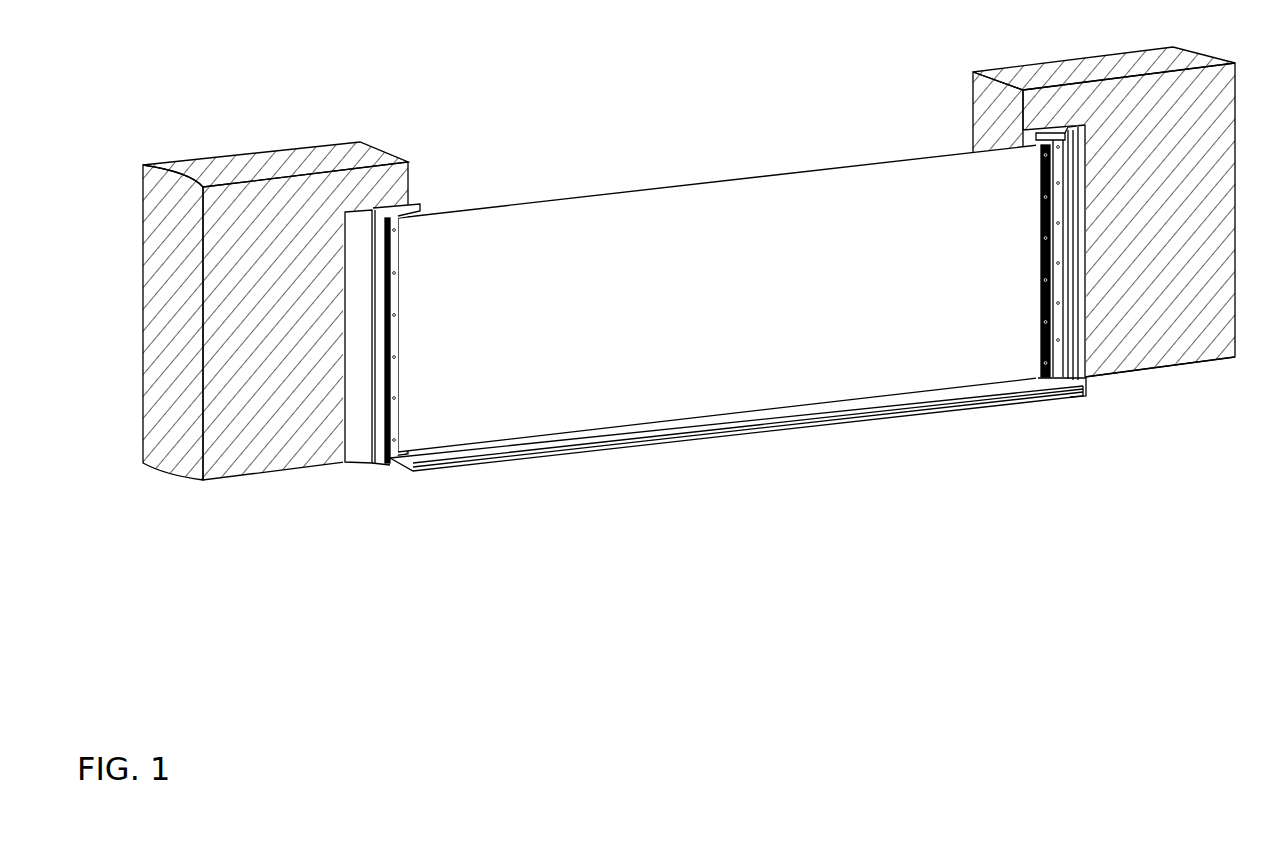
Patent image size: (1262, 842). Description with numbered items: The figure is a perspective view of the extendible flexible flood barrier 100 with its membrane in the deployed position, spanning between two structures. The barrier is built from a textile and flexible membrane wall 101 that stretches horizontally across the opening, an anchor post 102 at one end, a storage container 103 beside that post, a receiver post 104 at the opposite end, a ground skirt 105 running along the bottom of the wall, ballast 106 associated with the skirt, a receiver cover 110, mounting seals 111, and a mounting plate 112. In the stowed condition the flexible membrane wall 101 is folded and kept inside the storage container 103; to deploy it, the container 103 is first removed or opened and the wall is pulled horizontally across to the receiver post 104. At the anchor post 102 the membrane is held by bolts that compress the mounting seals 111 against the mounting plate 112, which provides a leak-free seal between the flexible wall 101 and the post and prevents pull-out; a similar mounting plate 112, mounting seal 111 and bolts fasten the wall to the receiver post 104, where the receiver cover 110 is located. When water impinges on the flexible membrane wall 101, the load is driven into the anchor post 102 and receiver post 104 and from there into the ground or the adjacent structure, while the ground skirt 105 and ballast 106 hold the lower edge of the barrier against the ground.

The extendible flexible flood barrier 100 is at (693, 117).
The flexible membrane wall 101 is at (617, 260).
The anchor post 102 is at (388, 302).
The storage container 103 is at (372, 385).
The receiver post 104 is at (1057, 383).
The ground skirt 105 is at (777, 433).
The ballast 106 is at (518, 445).
The receiver cover 110 is at (1083, 343).
The mounting seals 111 is at (1037, 142).
The mounting plate 112 is at (1045, 262).